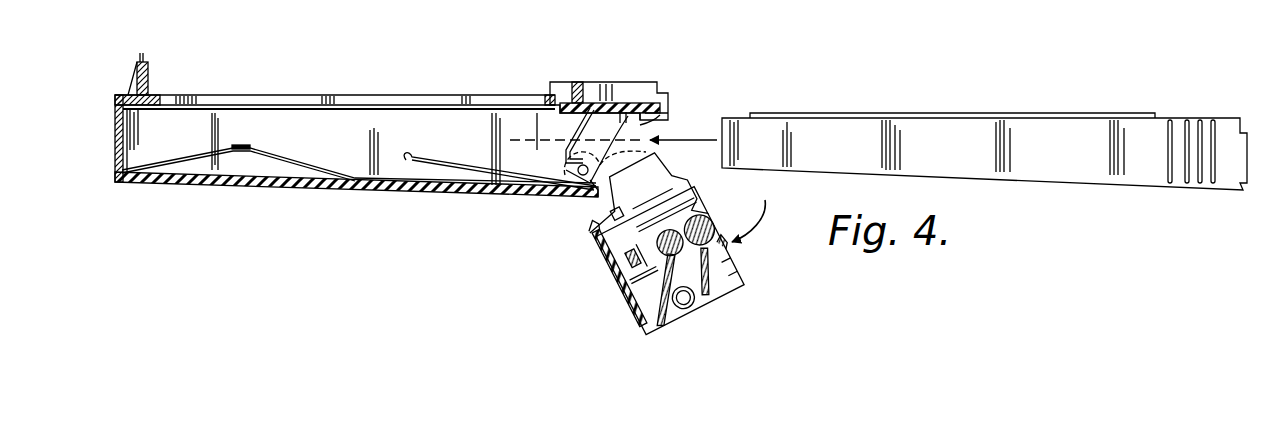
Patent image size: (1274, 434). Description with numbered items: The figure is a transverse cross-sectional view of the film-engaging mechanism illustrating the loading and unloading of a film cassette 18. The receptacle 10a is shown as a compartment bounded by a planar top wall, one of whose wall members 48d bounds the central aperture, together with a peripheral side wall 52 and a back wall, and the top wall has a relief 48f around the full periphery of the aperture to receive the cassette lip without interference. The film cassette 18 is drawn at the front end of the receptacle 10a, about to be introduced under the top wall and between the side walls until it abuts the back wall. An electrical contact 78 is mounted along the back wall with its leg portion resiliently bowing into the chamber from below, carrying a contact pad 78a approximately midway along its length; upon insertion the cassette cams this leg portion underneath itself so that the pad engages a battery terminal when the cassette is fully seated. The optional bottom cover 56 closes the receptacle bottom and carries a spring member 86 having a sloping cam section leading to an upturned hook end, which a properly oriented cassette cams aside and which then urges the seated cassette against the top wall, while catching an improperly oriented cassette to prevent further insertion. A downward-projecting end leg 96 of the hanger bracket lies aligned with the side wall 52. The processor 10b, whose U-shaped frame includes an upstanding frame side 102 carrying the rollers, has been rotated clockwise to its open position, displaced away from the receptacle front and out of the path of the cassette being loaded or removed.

The receptacle 10a is at (490, 205).
The processor 10b is at (606, 283).
The film cassette 18 is at (972, 100).
The top wall member 48d is at (406, 95).
The relief 48f is at (153, 110).
The side wall 52 is at (340, 123).
The bottom cover 56 is at (292, 188).
The contact 78 is at (143, 52).
The contact pad 78a is at (236, 146).
The spring member 86 is at (480, 167).
The end leg 96 is at (612, 136).
The frame side 102 is at (639, 204).